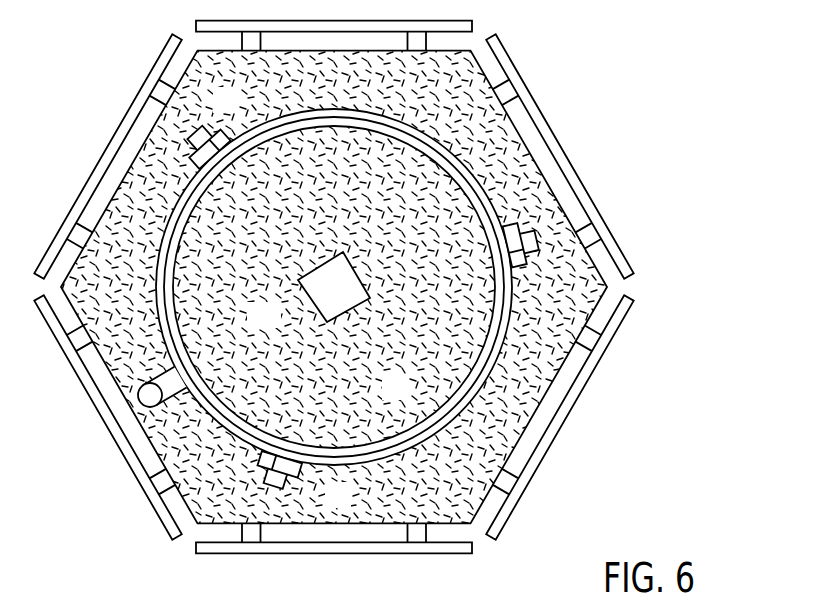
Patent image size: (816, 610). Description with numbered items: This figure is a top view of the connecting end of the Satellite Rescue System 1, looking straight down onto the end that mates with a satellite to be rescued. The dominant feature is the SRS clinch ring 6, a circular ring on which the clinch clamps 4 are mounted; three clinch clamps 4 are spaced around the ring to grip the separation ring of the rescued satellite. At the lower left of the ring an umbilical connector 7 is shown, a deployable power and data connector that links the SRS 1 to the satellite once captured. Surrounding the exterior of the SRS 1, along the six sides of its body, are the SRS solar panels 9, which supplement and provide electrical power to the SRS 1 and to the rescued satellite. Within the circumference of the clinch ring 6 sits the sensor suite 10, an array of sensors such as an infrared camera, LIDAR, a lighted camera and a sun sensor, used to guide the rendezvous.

The Satellite Rescue System 1 is at (625, 68).
The clinch clamps 4 is at (195, 132).
The SRS clinch ring 6 is at (445, 422).
The umbilical connector 7 is at (142, 400).
The SRS solar panels 9 is at (103, 157).
The sensor suite 10 is at (322, 290).